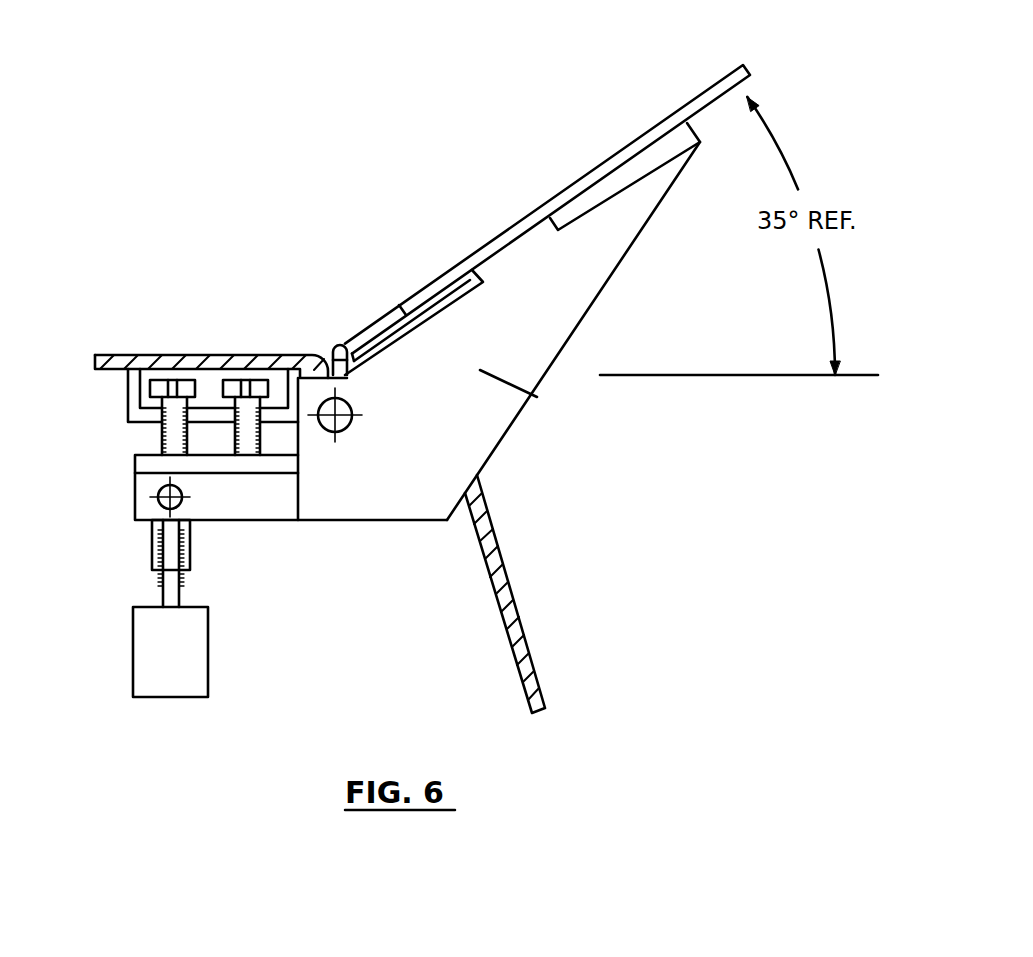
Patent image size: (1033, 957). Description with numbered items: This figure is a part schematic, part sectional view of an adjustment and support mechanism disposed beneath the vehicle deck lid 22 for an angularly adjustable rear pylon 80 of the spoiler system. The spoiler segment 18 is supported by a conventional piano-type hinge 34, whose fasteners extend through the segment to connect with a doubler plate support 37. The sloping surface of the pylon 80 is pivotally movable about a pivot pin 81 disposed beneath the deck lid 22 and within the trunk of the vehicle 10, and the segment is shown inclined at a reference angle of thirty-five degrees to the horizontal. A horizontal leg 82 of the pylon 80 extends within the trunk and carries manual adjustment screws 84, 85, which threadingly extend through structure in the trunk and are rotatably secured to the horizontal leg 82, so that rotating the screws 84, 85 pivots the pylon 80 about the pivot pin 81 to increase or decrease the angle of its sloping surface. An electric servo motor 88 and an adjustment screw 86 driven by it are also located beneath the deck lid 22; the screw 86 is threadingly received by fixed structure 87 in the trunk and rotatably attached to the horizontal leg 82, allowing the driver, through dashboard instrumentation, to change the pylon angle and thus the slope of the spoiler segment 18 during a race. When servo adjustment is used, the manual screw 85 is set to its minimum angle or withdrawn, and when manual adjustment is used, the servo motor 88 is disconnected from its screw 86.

The vehicle 10 is at (503, 570).
The spoiler segment 18 is at (683, 107).
The vehicle deck lid 22 is at (103, 355).
The piano-type hinge 34 is at (378, 320).
The doubler plate support 37 is at (450, 284).
The pylon 80 is at (555, 407).
The pivot pin 81 is at (358, 417).
The horizontal leg 82 is at (283, 473).
The adjustment screw 84 is at (248, 380).
The adjustment screw 85 is at (175, 380).
The adjustment screw 86 is at (168, 582).
The fixed structure 87 is at (152, 548).
The electric servo motor 88 is at (208, 683).